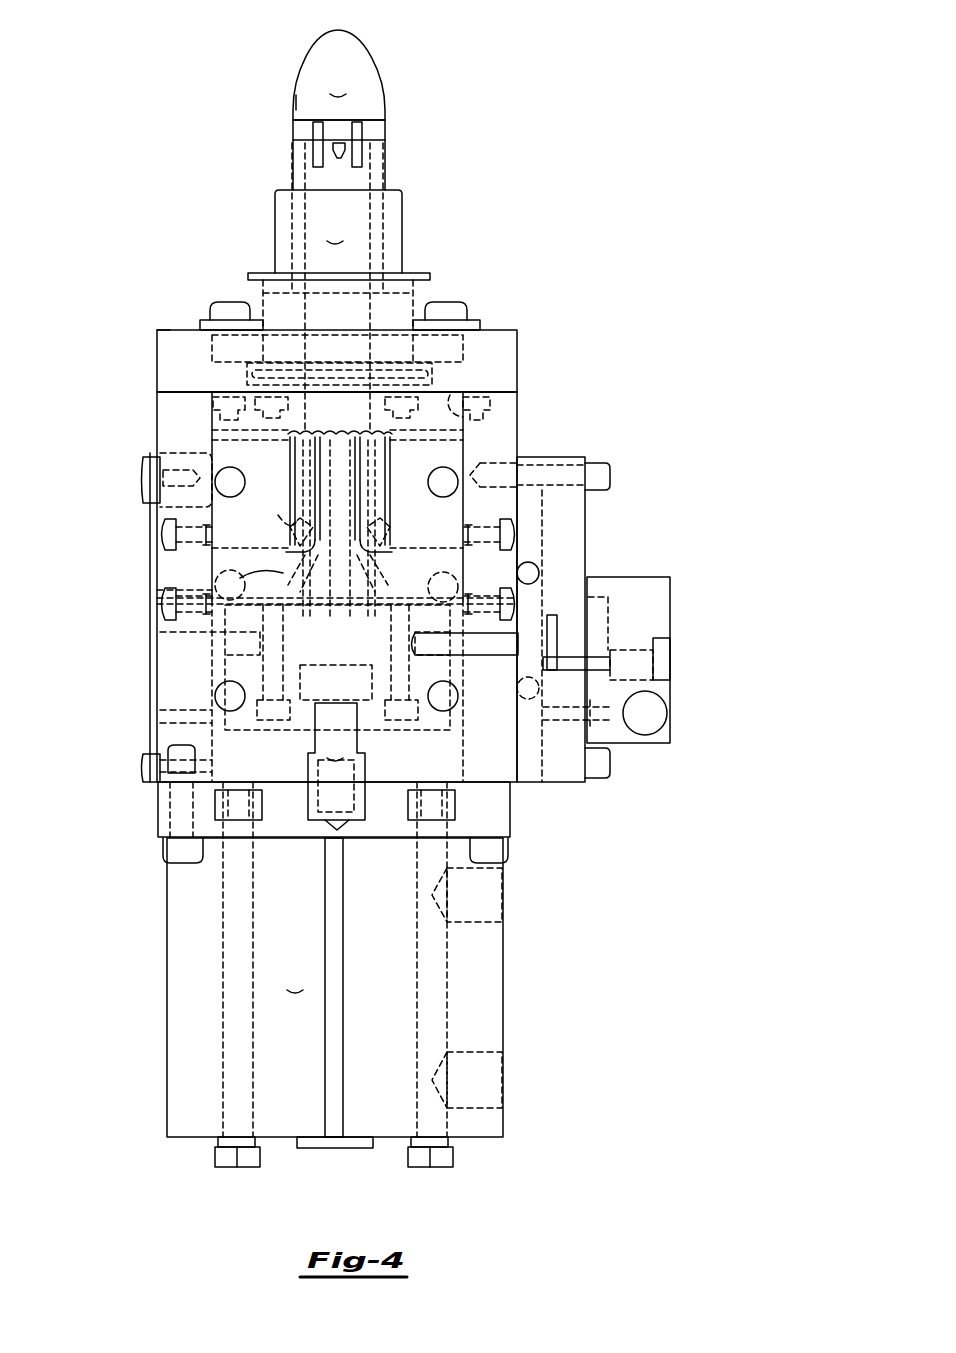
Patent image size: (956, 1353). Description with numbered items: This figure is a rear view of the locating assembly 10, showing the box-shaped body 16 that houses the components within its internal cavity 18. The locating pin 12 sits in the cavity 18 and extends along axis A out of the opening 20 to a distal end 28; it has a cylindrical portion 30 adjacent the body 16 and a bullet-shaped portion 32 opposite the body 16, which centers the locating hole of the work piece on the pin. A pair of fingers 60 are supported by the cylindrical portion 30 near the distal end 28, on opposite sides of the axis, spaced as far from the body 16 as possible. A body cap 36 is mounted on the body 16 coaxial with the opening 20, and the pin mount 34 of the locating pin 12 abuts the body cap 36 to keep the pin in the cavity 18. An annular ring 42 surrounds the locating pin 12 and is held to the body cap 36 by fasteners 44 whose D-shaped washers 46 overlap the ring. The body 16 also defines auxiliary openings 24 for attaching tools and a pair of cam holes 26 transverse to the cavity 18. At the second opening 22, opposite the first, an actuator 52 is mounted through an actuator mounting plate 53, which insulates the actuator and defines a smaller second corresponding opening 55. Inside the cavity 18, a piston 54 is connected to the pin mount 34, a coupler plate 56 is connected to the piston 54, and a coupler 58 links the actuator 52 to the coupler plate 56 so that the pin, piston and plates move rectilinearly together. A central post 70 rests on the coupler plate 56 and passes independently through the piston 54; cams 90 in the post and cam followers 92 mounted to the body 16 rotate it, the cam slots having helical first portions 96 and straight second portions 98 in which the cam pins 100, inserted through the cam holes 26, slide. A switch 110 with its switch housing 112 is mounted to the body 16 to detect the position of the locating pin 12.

The locating assembly 10 is at (140, 200).
The locating pin 12 is at (392, 86).
The body 16 is at (158, 438).
The internal cavity 18 is at (212, 425).
The opening 20 is at (468, 412).
The second opening 22 is at (215, 774).
The auxiliary openings 24 is at (214, 482).
The cam holes 26 is at (165, 541).
The distal end 28 is at (378, 75).
The cylindrical portion 30 is at (380, 160).
The bullet-shaped portion 32 is at (338, 82).
The pin mount 34 is at (480, 390).
The body cap 36 is at (502, 336).
The annular ring 42 is at (280, 205).
The fasteners 44 is at (230, 304).
The D-shaped washers 46 is at (205, 320).
The actuator 52 is at (335, 1002).
The actuator mounting plate 53 is at (512, 806).
The piston 54 is at (150, 461).
The second corresponding opening 55 is at (393, 828).
The coupler plate 56 is at (226, 665).
The coupler 58 is at (300, 882).
The fingers 60 is at (378, 128).
The central post 70 is at (336, 230).
The cams 90 is at (308, 454).
The cam followers 92 is at (145, 590).
The first portions 96 is at (284, 549).
The second portions 98 is at (286, 524).
The cam pins 100 is at (300, 571).
The switch 110 is at (650, 578).
The switch housing 112 is at (588, 556).